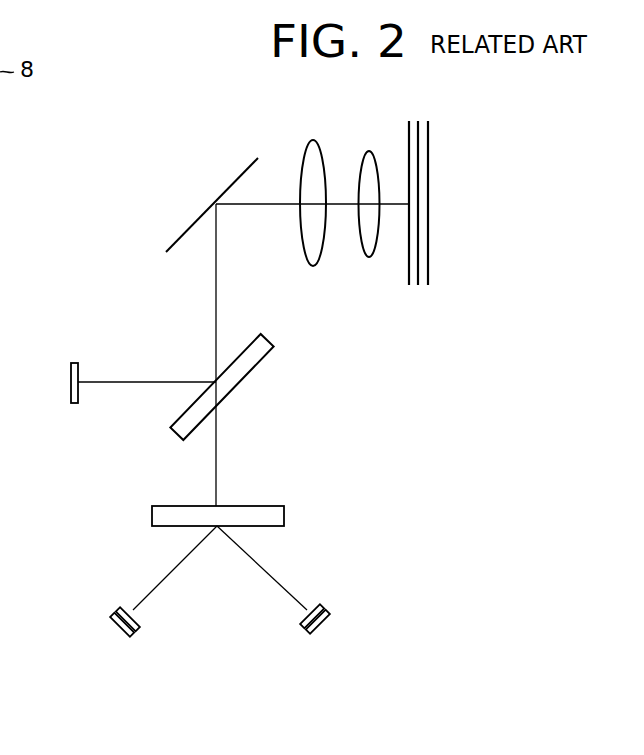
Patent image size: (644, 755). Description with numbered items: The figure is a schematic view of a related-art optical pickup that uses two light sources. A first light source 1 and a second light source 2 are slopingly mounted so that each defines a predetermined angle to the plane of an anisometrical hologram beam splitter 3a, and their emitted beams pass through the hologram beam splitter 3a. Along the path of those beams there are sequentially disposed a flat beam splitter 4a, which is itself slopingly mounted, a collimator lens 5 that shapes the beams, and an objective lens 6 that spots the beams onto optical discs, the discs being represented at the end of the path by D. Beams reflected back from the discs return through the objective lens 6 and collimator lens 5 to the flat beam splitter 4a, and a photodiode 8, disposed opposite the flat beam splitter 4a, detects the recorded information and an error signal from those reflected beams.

The first light source 1 is at (117, 628).
The second light source 2 is at (320, 628).
The anisometrical hologram beam splitter 3a is at (258, 506).
The flat beam splitter 4a is at (243, 381).
The collimator lens 5 is at (303, 250).
The objective lens 6 is at (360, 240).
The photodiode 8 is at (71, 379).
The detector D is at (428, 242).